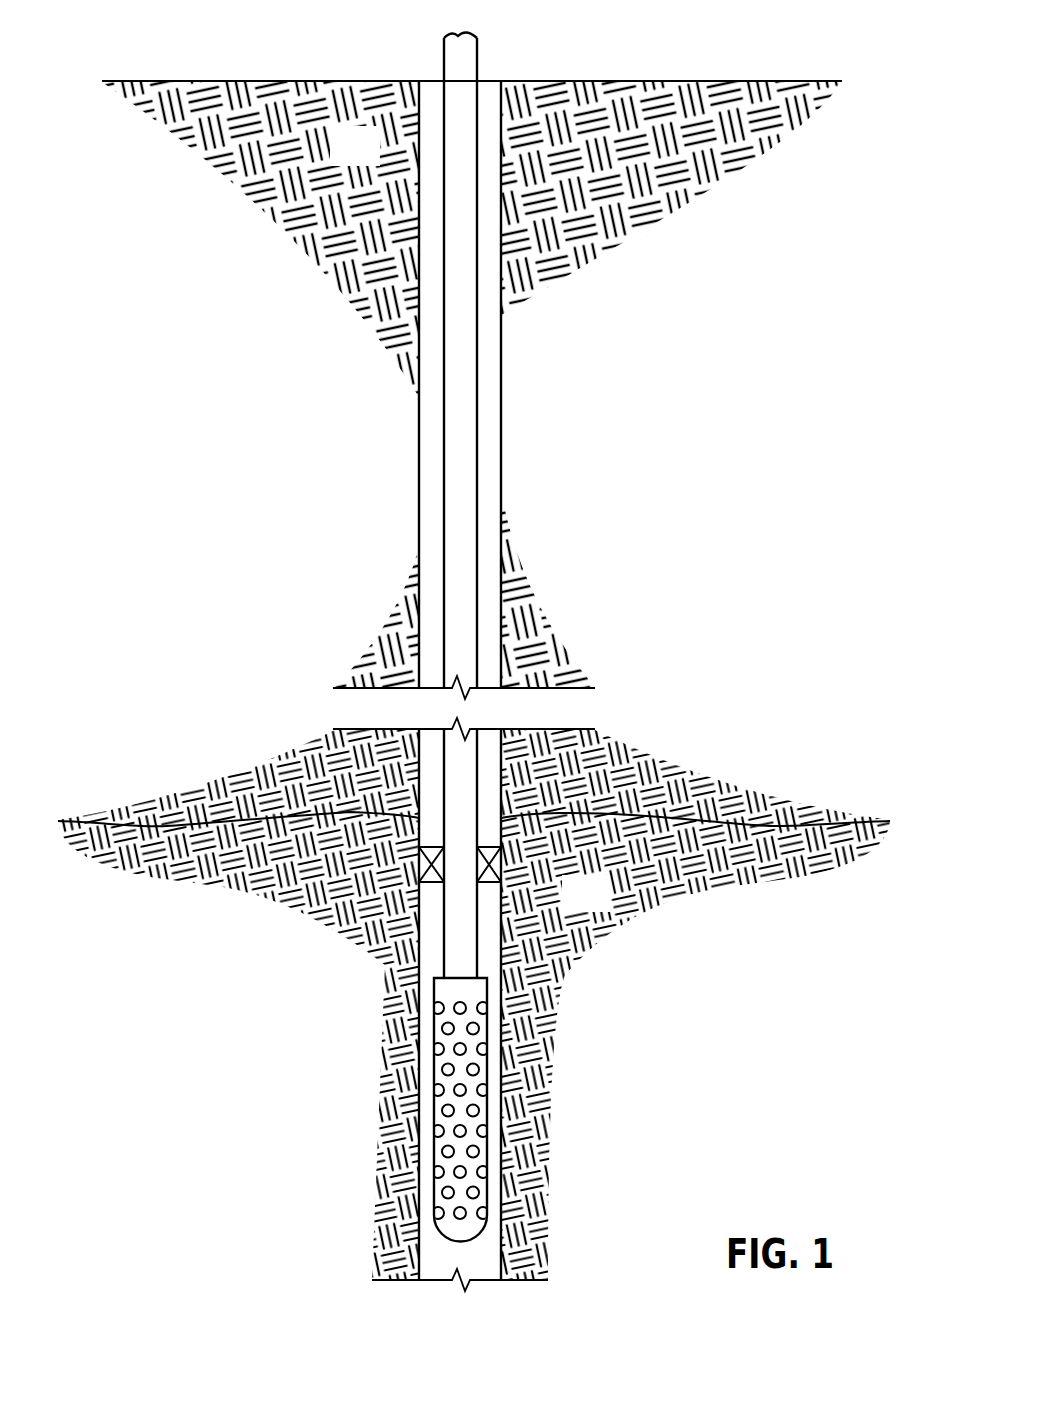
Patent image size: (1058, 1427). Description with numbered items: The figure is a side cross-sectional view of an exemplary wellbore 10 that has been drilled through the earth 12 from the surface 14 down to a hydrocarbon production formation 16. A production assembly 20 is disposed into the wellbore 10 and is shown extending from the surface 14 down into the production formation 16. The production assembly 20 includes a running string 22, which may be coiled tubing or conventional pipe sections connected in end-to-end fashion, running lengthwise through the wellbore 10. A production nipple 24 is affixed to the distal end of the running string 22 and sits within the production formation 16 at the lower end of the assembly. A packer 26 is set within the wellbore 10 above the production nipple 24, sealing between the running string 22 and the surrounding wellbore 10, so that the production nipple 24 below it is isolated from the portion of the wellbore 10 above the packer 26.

The wellbore 10 is at (503, 352).
The earth 12 is at (372, 158).
The surface 14 is at (253, 80).
The hydrocarbon production formation 16 is at (602, 907).
The production assembly 20 is at (478, 428).
The running string 22 is at (455, 478).
The production nipple 24 is at (477, 1077).
The packer 26 is at (420, 864).